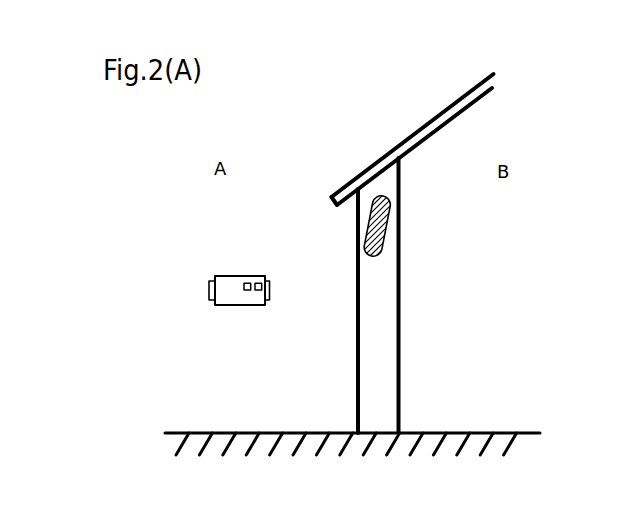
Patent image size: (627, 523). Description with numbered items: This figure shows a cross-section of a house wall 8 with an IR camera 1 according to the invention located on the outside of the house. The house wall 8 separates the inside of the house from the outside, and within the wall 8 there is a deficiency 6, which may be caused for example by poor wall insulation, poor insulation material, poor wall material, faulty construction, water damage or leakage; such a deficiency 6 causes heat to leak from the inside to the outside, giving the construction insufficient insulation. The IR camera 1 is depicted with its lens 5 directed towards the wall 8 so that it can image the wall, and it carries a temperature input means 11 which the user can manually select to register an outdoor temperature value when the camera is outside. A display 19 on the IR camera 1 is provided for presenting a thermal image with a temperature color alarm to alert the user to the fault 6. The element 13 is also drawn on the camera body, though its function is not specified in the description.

The IR camera 1 is at (220, 285).
The temperature input means 11 is at (246, 283).
The detector unit 13 is at (258, 283).
The display 19 is at (209, 290).
The lens 5 is at (270, 296).
The deficiency 6 is at (381, 196).
The house wall 8 is at (352, 264).